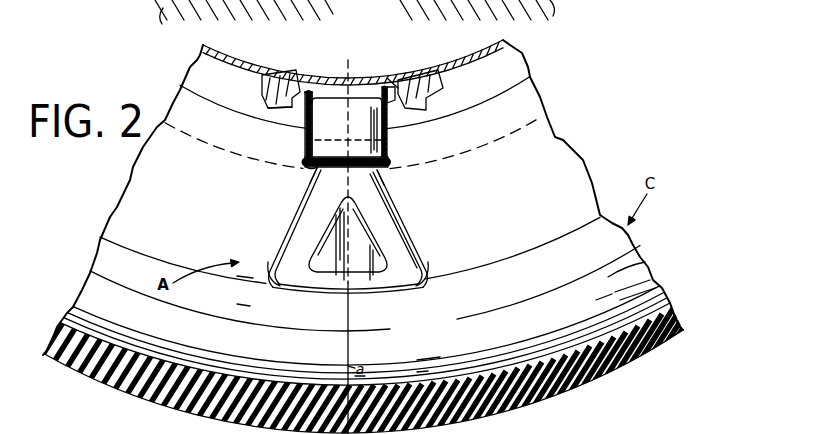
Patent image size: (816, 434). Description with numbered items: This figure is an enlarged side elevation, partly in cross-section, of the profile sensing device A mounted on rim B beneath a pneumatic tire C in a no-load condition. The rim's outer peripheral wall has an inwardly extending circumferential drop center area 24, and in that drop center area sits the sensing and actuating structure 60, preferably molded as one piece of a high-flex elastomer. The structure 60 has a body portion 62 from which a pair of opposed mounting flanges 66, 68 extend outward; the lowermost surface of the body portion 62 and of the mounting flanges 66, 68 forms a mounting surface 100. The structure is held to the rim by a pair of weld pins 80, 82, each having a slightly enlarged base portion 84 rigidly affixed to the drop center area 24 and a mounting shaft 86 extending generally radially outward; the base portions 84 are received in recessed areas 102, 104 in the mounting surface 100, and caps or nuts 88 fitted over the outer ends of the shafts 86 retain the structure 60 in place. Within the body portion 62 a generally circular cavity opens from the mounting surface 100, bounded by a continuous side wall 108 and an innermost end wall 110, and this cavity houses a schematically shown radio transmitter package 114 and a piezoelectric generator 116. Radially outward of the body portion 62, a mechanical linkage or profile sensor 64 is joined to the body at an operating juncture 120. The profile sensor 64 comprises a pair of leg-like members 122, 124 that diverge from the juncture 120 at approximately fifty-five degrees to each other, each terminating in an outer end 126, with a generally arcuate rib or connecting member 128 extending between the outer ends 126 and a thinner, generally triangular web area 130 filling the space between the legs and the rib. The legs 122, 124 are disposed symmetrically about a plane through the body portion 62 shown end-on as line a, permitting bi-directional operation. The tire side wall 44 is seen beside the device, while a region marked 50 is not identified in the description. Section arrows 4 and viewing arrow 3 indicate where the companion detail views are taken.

The drop center area 24 is at (460, 57).
The mounting flange 68 is at (262, 80).
The mounting flange 66 is at (440, 83).
The sensing and actuating structure 60 is at (450, 190).
The side wall 44 is at (556, 224).
The tire bead seat 50 is at (642, 257).
The section line 4- 4 is at (468, 106).
The section arrow 3 is at (335, 14).
The weld pin 82 is at (278, 80).
The base portion 84 is at (283, 77).
The caps or nuts 88 is at (280, 101).
The recessed area 104 is at (305, 86).
The weld pin 80 is at (420, 99).
The mounting shaft 86 is at (420, 107).
The mounting surface 100 is at (387, 78).
The recessed area 102 is at (440, 67).
The piezoelectric generator 116 is at (358, 95).
The side wall 108 is at (303, 147).
The radio transmitter package 114 is at (333, 123).
The body portion 62 is at (404, 158).
The innermost end wall 110 is at (310, 166).
The operating juncture 120 is at (335, 172).
The leg-like member 124 is at (308, 221).
The leg-like member 122 is at (380, 212).
The profile sensor 64 is at (424, 234).
The arcuate shaped rib or connecting member 128 is at (353, 292).
The outer end 126 is at (292, 278).
The triangular web area 130 is at (330, 241).